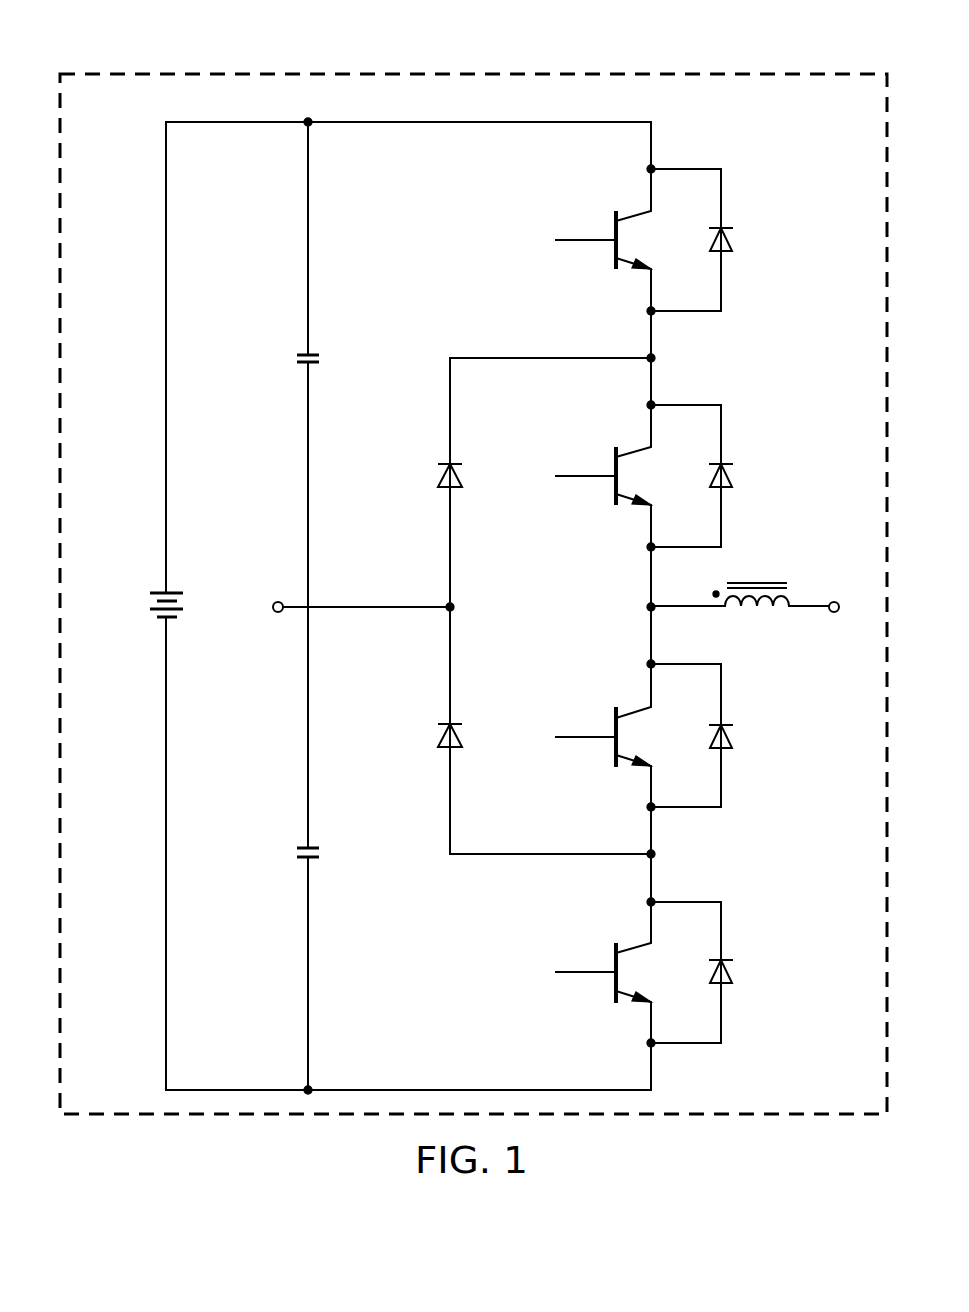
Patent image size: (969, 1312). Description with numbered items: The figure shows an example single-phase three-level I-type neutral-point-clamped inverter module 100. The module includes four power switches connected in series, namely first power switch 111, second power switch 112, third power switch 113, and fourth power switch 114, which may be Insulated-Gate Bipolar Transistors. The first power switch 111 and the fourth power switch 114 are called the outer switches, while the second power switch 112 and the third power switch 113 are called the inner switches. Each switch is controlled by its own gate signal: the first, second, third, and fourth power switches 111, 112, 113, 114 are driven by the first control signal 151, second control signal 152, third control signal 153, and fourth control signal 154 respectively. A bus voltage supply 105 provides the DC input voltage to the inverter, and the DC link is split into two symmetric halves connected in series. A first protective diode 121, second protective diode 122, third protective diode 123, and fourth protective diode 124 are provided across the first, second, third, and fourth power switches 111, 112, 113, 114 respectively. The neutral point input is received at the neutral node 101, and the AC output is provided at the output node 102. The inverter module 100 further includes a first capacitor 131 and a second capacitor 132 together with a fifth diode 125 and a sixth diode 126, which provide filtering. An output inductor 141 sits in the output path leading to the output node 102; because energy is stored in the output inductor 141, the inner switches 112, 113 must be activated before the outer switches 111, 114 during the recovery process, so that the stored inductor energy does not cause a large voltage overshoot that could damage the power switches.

The inverter module 100 is at (234, 74).
The bus voltage supply 105 is at (148, 599).
The node 101 is at (278, 613).
The capacitor C1 131 is at (294, 355).
The capacitor C2 132 is at (294, 851).
The diode D5 125 is at (438, 480).
The diode D6 126 is at (438, 735).
The power switch Q1 111 is at (608, 252).
The power switch Q2 112 is at (608, 488).
The power switch Q3 113 is at (608, 722).
The power switch Q4 114 is at (608, 958).
The signal S1 151 is at (579, 238).
The signal S2 152 is at (579, 474).
The signal S3 153 is at (580, 740).
The signal S4 154 is at (580, 975).
The protective diode D1 121 is at (735, 240).
The protective diode D2 122 is at (735, 477).
The protective diode D3 123 is at (735, 736).
The protective diode D4 124 is at (735, 972).
The inductor L1 141 is at (763, 615).
The node 102 is at (837, 614).